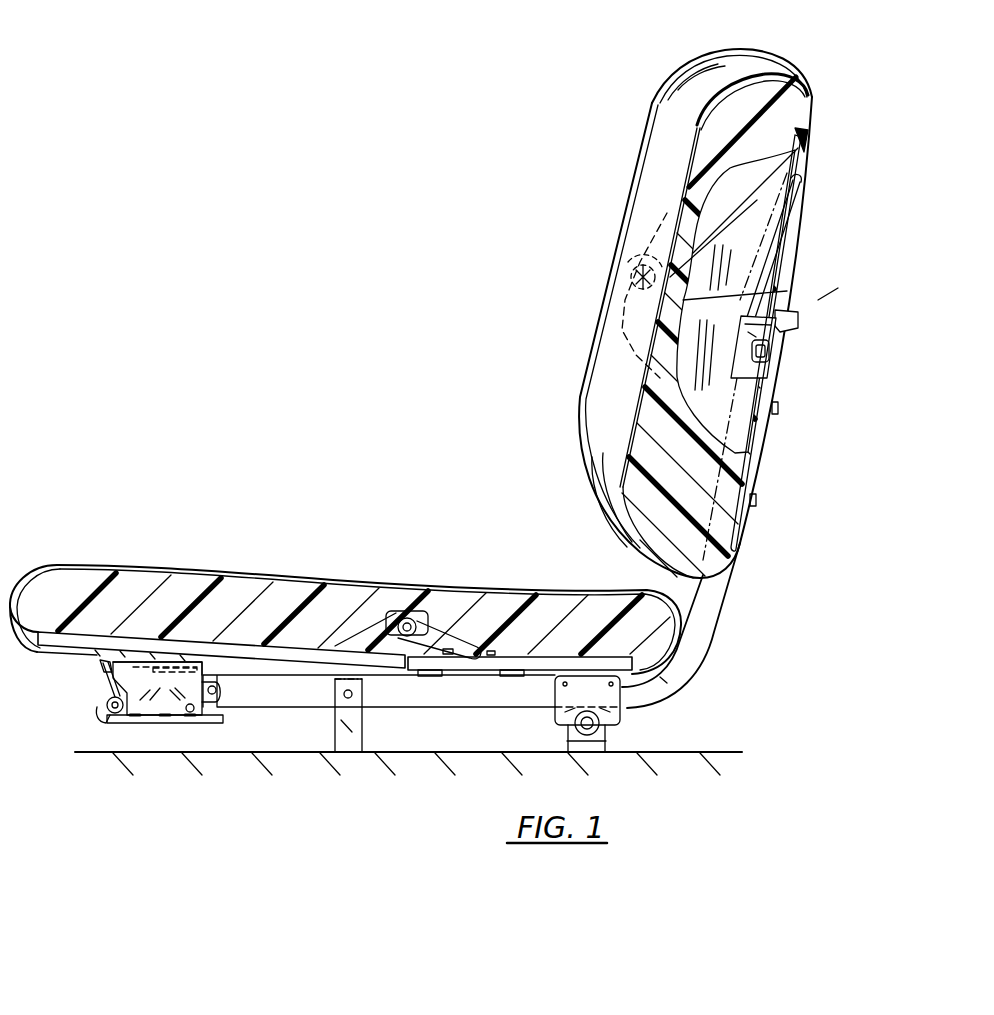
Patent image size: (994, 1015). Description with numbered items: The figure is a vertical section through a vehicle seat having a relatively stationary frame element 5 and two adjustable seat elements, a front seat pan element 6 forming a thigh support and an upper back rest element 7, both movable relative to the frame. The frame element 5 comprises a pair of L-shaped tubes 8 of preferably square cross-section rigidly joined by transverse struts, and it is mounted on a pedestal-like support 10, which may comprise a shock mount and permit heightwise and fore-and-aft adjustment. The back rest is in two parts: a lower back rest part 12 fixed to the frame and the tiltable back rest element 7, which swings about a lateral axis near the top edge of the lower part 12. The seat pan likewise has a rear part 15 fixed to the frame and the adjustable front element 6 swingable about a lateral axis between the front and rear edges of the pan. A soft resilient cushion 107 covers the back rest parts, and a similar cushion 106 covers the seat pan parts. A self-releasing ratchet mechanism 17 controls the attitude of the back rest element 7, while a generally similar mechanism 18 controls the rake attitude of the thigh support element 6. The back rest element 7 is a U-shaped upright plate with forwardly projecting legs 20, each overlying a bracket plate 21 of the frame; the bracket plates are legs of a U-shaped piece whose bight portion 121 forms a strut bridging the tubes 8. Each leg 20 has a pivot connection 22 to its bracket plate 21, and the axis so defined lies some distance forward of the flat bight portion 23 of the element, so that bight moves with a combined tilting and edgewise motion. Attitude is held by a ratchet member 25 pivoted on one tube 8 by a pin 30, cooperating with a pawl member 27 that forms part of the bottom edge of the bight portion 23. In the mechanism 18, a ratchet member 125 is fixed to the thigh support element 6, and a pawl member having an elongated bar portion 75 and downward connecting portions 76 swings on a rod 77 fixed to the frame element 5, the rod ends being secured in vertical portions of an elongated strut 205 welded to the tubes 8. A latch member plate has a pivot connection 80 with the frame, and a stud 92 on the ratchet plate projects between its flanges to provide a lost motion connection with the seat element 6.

The frame element 5 is at (727, 643).
The seat pan element 6 is at (242, 650).
The back rest element 7 is at (800, 168).
The L-shaped tubes 8 is at (718, 606).
The pedestal-like support 10 is at (438, 731).
The lower back rest part 12 is at (755, 467).
The rear part of seat pan 15 is at (525, 665).
The self-releasing ratchet mechanism 17 is at (818, 300).
The mechanism 18 is at (86, 699).
The legs 20 is at (757, 200).
The bracket plate 21 is at (665, 213).
The pivot connection 22 is at (640, 280).
The bight portion 23 is at (793, 218).
The ratchet member 25 is at (790, 314).
The pawl member 27 is at (778, 322).
The pin 30 is at (768, 348).
The bar portion 75 is at (107, 668).
The connecting portions 76 is at (102, 689).
The rod 77 is at (112, 708).
The pivot connection 80 is at (220, 694).
The stud 92 is at (193, 711).
The cushion 106 is at (192, 578).
The cushion 107 is at (782, 84).
The bight portion 121 is at (760, 447).
The ratchet member 125 is at (215, 670).
The elongated strut 205 is at (140, 726).